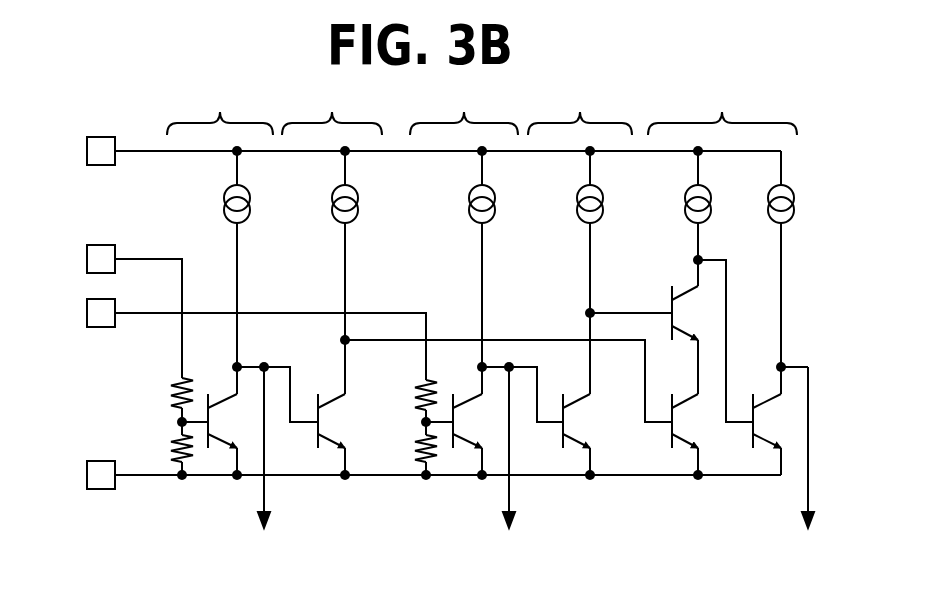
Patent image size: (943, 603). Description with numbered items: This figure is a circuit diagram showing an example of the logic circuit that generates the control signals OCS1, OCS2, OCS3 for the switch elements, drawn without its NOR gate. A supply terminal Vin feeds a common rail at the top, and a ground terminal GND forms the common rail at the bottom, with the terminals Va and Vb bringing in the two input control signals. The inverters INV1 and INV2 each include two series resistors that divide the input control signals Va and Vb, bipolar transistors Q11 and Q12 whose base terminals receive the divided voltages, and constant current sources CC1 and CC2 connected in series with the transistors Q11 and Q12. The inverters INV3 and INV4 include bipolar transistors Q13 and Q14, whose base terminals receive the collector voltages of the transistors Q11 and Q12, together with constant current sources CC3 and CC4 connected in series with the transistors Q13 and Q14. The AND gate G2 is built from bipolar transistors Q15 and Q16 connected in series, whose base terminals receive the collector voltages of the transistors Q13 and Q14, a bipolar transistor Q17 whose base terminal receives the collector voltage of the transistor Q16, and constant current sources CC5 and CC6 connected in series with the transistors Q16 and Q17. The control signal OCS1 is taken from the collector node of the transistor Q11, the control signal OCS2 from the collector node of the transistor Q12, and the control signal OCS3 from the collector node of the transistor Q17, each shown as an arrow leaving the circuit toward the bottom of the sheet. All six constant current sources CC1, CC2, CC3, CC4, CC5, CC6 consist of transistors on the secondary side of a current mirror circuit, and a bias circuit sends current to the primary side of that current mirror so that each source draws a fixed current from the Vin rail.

The input voltage terminal Vin is at (77, 151).
The input control signal Va is at (78, 259).
The input control signal Vb is at (78, 313).
The ground terminal GND is at (74, 475).
The constant current source CC1 is at (260, 213).
The constant current source CC2 is at (505, 213).
The constant current source CC3 is at (368, 213).
The constant current source CC4 is at (613, 213).
The constant current source CC5 is at (721, 213).
The constant current source CC6 is at (804, 213).
The bipolar transistor Q11 is at (234, 421).
The bipolar transistor Q12 is at (479, 421).
The bipolar transistor Q13 is at (354, 421).
The bipolar transistor Q14 is at (599, 421).
The bipolar transistor Q15 is at (697, 421).
The bipolar transistor Q16 is at (697, 313).
The bipolar transistor Q17 is at (778, 421).
The inverter INV1 is at (220, 110).
The inverter INV2 is at (464, 110).
The inverter INV3 is at (332, 110).
The inverter INV4 is at (580, 110).
The AND gate G2 is at (722, 110).
The control signal OCS1 is at (257, 468).
The control signal OCS2 is at (502, 468).
The control signal OCS3 is at (801, 468).